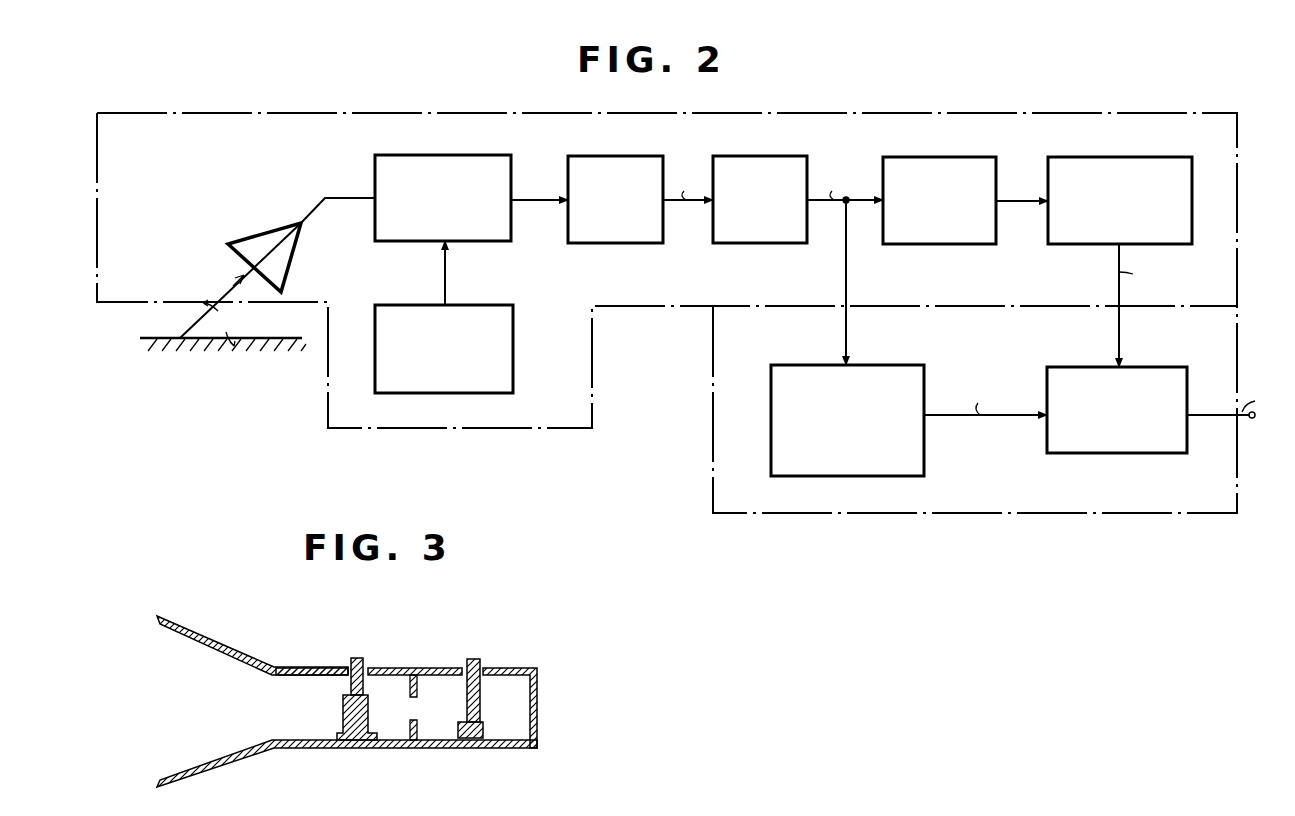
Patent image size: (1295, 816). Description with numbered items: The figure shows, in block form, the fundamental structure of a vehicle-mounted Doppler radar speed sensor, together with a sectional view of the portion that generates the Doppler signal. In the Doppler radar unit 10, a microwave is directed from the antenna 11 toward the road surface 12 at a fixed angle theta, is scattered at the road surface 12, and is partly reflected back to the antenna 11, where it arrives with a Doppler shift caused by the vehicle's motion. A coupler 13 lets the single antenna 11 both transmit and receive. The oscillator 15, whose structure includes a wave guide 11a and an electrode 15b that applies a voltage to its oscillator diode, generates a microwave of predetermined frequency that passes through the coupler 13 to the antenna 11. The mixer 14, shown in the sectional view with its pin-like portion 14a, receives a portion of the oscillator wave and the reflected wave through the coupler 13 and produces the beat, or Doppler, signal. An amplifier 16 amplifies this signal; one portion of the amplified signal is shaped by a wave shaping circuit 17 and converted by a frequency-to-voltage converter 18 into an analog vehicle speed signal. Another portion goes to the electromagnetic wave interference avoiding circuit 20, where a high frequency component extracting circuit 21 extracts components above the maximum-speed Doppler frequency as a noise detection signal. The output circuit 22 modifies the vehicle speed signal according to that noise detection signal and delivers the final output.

In FIG. 2, the Doppler radar unit 10 is at (922, 113).
In FIG. 2, the antenna 11 is at (259, 234).
In FIG. 3, the antenna 11 is at (206, 637).
In FIG. 3, the wave guide 11a is at (537, 692).
In FIG. 2, the road surface 12 is at (158, 338).
In FIG. 2, the coupler 13 is at (446, 155).
In FIG. 3, the coupler 13 is at (296, 686).
In FIG. 2, the mixer 14 is at (613, 156).
In FIG. 3, the mixer 14 is at (347, 720).
In FIG. 3, the mixer pin 14a is at (359, 657).
In FIG. 2, the oscillator 15 is at (486, 305).
In FIG. 3, the oscillator 15 is at (442, 686).
In FIG. 3, the electrode 15b is at (473, 658).
In FIG. 2, the amplifier 16 is at (765, 156).
In FIG. 2, the wave shaping circuit 17 is at (933, 157).
In FIG. 2, the frequency-to-voltage converter 18 is at (1118, 157).
In FIG. 2, the electromagnetic wave interference avoiding circuit 20 is at (713, 412).
In FIG. 2, the high frequency component extracting circuit 21 is at (890, 365).
In FIG. 2, the output circuit 22 is at (1167, 367).